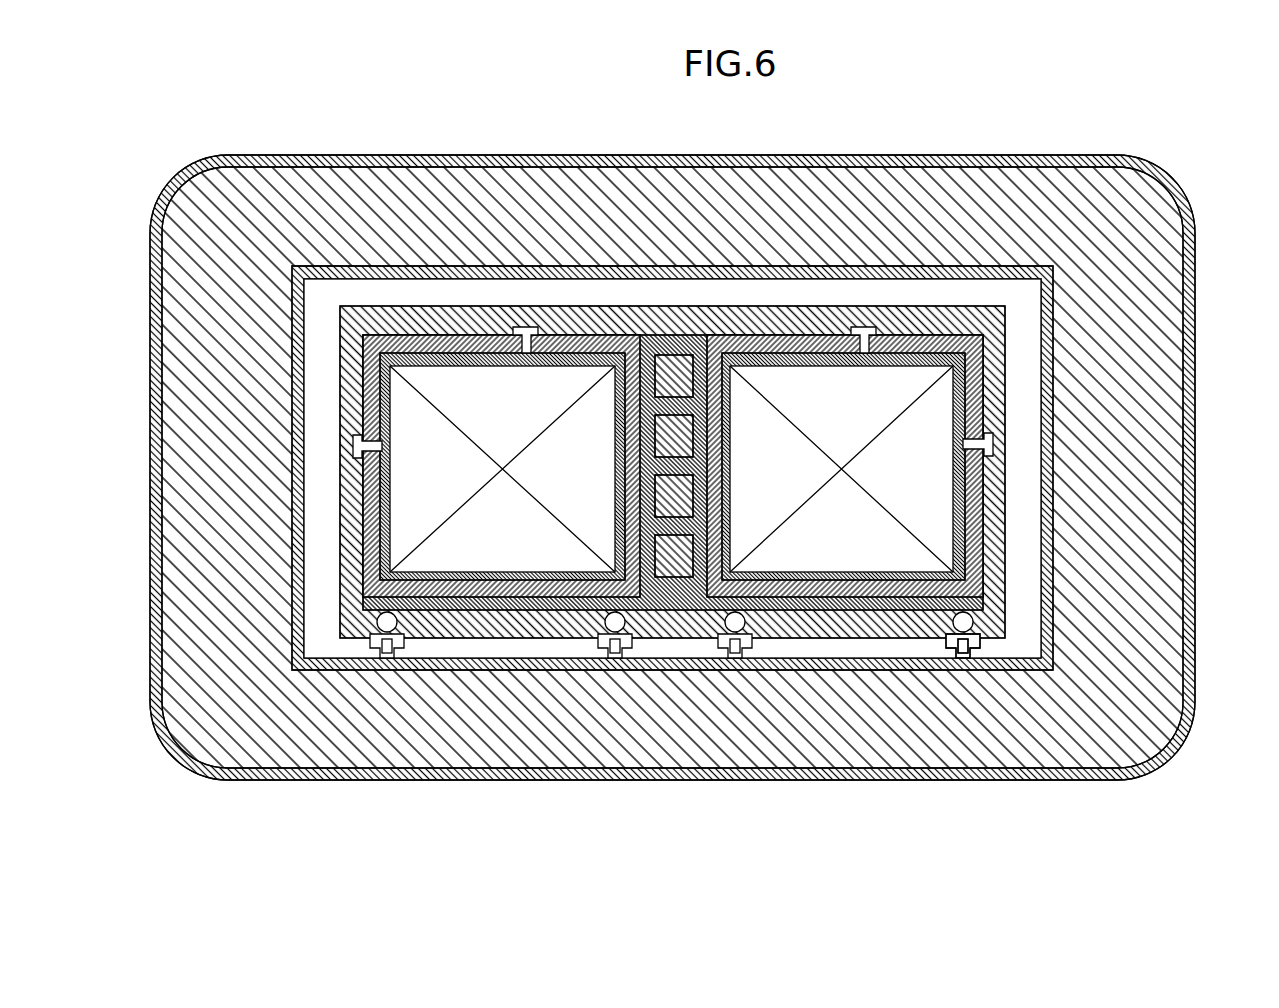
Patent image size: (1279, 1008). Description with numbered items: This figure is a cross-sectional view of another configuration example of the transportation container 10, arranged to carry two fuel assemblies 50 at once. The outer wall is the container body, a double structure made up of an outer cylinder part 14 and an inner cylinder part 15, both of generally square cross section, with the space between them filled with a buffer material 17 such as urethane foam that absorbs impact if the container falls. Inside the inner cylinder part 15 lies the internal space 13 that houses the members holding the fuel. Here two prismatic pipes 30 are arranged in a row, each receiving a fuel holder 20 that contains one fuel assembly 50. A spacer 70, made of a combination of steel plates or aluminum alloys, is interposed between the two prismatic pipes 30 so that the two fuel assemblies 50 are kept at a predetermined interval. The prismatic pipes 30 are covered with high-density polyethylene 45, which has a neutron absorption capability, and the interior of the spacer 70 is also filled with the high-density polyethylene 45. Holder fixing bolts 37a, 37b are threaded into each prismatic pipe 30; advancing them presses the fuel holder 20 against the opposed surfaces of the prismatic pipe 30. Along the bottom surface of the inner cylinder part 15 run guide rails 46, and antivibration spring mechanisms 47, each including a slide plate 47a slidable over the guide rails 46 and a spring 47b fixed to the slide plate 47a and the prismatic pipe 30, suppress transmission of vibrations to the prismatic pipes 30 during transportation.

The transportation container 10 is at (662, 883).
The internal space 13 is at (965, 296).
The outer cylinder part 14 is at (368, 160).
The inner cylinder part 15 is at (440, 268).
The buffer material 17 is at (172, 273).
The fuel holder 20 is at (388, 550).
The prismatic pipe 30 is at (372, 490).
The holder fixing bolt 37a is at (526, 327).
The holder fixing bolt 37b is at (353, 446).
The high-density polyethylene 45 is at (350, 330).
The guide rail 46 is at (387, 650).
The antivibration spring mechanism 47 is at (363, 650).
The slide plate 47a is at (968, 650).
The spring 47b is at (980, 650).
The fuel assembly 50 is at (458, 560).
The spacer 70 is at (673, 335).